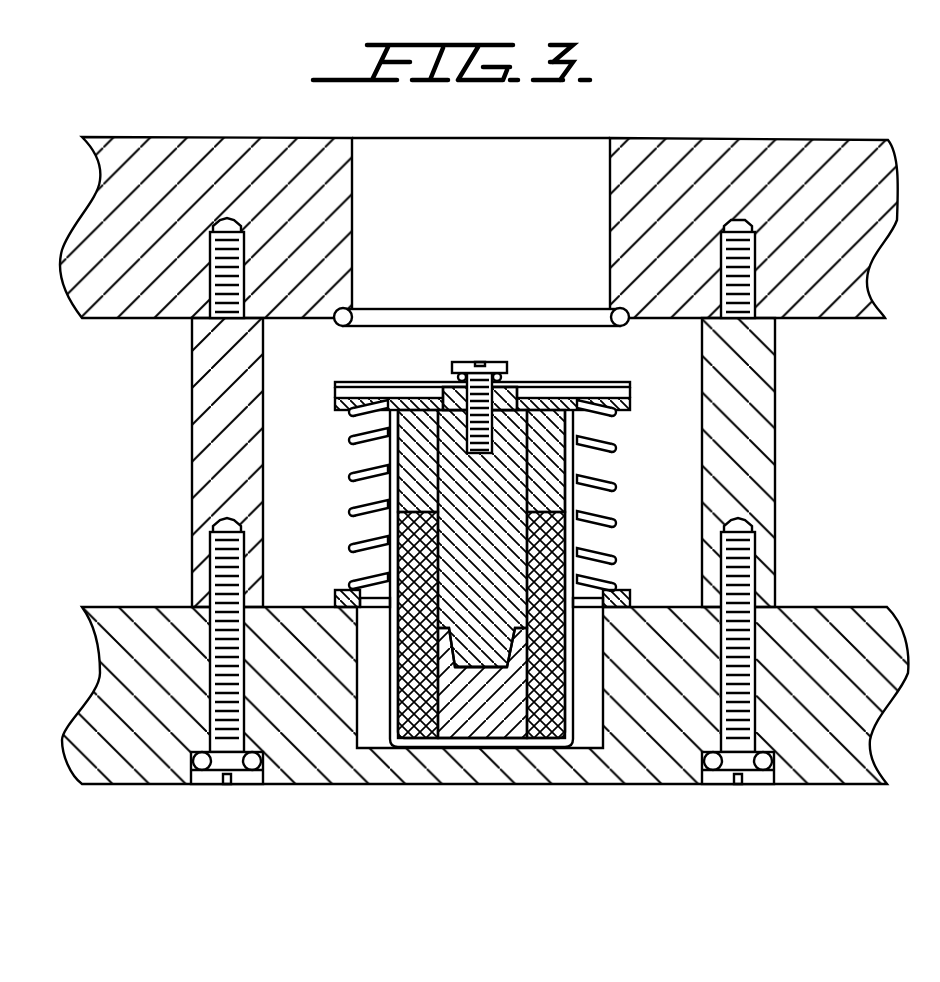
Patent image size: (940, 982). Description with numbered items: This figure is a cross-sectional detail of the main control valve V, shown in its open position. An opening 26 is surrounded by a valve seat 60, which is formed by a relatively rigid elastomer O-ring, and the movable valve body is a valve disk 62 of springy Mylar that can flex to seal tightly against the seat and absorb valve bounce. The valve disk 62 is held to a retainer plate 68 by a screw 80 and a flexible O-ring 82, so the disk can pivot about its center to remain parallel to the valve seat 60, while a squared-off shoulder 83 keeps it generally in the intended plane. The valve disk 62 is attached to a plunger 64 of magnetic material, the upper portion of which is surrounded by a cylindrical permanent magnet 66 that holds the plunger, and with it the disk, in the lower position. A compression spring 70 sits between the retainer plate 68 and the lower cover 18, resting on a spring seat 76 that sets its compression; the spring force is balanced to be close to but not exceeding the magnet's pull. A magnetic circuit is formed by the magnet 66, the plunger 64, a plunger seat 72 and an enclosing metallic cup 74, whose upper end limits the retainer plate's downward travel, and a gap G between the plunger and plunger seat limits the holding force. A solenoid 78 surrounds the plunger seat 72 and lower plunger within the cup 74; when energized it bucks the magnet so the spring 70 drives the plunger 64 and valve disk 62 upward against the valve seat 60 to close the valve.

The lower cover 18 is at (150, 780).
The opening 26 is at (476, 184).
The valve seat 60 is at (418, 305).
The valve disk 62 is at (608, 381).
The plunger 64 is at (493, 488).
The permanent magnet 66 is at (545, 425).
The retainer plate 68 is at (335, 402).
The compression spring 70 is at (345, 475).
The plunger seat 72 is at (462, 722).
The cup 74 is at (388, 737).
The spring seat 76 is at (340, 594).
The solenoid 78 is at (545, 720).
The screw 80 is at (494, 366).
The O-ring 82 is at (455, 379).
The squared-off shoulder 83 is at (535, 383).
The gap G is at (480, 668).
The valve V is at (640, 353).